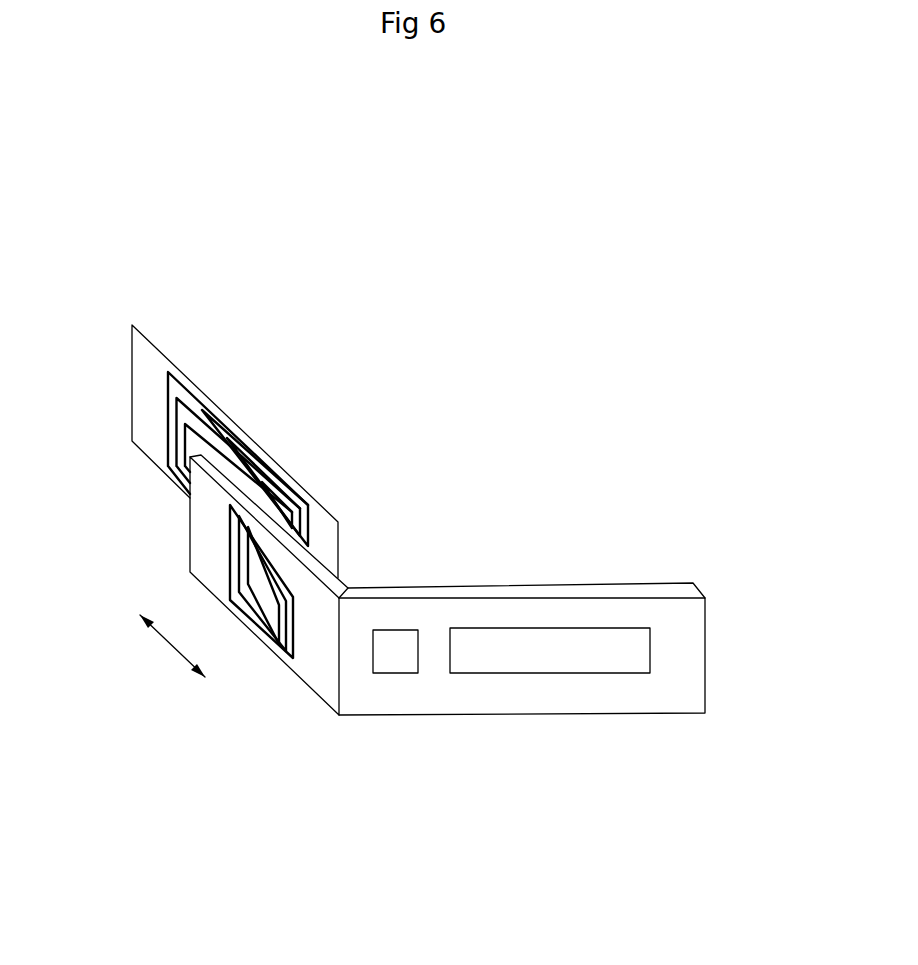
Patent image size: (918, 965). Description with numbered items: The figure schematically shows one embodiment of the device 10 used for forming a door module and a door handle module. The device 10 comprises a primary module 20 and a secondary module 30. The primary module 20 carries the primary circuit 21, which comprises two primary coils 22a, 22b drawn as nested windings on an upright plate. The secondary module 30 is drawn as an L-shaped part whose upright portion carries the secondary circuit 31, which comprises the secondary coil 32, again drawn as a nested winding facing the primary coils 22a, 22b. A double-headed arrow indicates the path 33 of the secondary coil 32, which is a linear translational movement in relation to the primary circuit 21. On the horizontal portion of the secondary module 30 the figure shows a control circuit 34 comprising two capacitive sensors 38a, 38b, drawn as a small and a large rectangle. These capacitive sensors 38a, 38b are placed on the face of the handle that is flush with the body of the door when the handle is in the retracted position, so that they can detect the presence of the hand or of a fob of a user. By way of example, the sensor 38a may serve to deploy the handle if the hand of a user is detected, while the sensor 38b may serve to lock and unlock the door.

The device 10 is at (548, 310).
The primary module 20 is at (349, 397).
The primary circuit 21 is at (128, 380).
The primary coil 22a is at (300, 492).
The primary coil 22b is at (178, 386).
The secondary module 30 is at (434, 543).
The secondary circuit 31 is at (190, 580).
The secondary coil 32 is at (266, 645).
The path 33 is at (172, 647).
The control circuit 34 is at (526, 593).
The capacitive sensor 38a is at (547, 672).
The capacitive sensor 38b is at (393, 673).